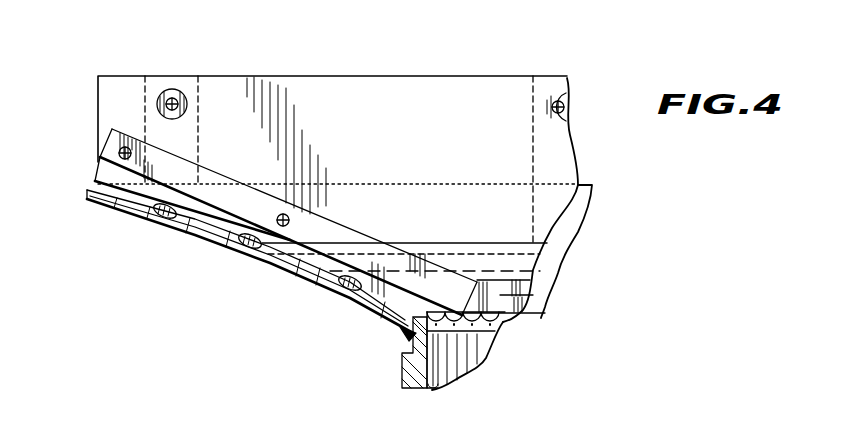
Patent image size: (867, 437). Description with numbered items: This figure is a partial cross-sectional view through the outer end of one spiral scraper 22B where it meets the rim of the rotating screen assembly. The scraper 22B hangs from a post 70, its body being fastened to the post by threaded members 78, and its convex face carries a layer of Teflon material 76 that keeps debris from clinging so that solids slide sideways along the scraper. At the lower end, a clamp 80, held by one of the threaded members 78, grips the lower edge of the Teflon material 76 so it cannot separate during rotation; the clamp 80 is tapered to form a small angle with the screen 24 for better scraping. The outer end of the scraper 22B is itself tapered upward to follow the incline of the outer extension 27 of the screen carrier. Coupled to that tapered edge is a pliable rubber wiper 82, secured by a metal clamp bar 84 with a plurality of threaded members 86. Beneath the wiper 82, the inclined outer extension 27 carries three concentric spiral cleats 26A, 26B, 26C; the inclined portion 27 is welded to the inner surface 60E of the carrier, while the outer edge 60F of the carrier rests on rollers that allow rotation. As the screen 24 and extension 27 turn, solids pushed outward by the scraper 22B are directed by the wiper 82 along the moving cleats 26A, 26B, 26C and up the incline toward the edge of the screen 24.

The spiral-shaped scraper 22B is at (342, 62).
The Teflon material 76 is at (481, 87).
The threaded members 78 is at (176, 89).
The post 70 is at (566, 158).
The clamp bar 84 is at (105, 154).
The threaded members 86 is at (120, 150).
The pliable wiper 82 is at (93, 174).
The outer extension 27 is at (288, 291).
The spiral-shaped cleat 26C is at (156, 222).
The spiral-shaped cleat 26B is at (243, 252).
The spiral-shaped cleat 26A is at (338, 291).
The clamp 80 is at (541, 313).
The inner surface of the carrier 60E is at (433, 390).
The screen 24 is at (503, 330).
The outer edge of the carrier 60F is at (403, 358).